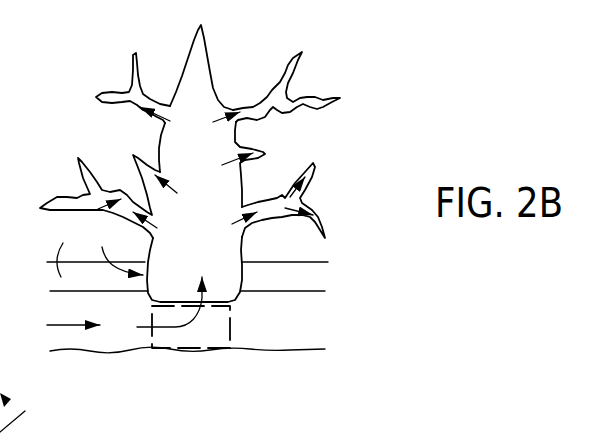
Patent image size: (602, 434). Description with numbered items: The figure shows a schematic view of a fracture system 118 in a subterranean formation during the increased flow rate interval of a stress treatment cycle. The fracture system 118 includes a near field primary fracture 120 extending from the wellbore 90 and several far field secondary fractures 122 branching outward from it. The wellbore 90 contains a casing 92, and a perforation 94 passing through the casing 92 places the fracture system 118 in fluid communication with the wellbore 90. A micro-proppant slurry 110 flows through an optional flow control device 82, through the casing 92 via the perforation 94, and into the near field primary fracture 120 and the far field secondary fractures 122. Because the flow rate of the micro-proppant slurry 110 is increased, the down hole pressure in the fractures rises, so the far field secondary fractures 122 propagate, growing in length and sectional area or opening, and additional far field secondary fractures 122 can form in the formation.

The fracture system 118 is at (345, 60).
The near field primary fracture 120 is at (215, 187).
The far field secondary fracture 122 is at (135, 60).
The casing 92 is at (100, 196).
The perforation 94 is at (133, 206).
The wellbore 90 is at (290, 327).
The micro-proppant slurry 110 is at (178, 327).
The flow control device 82 is at (218, 348).